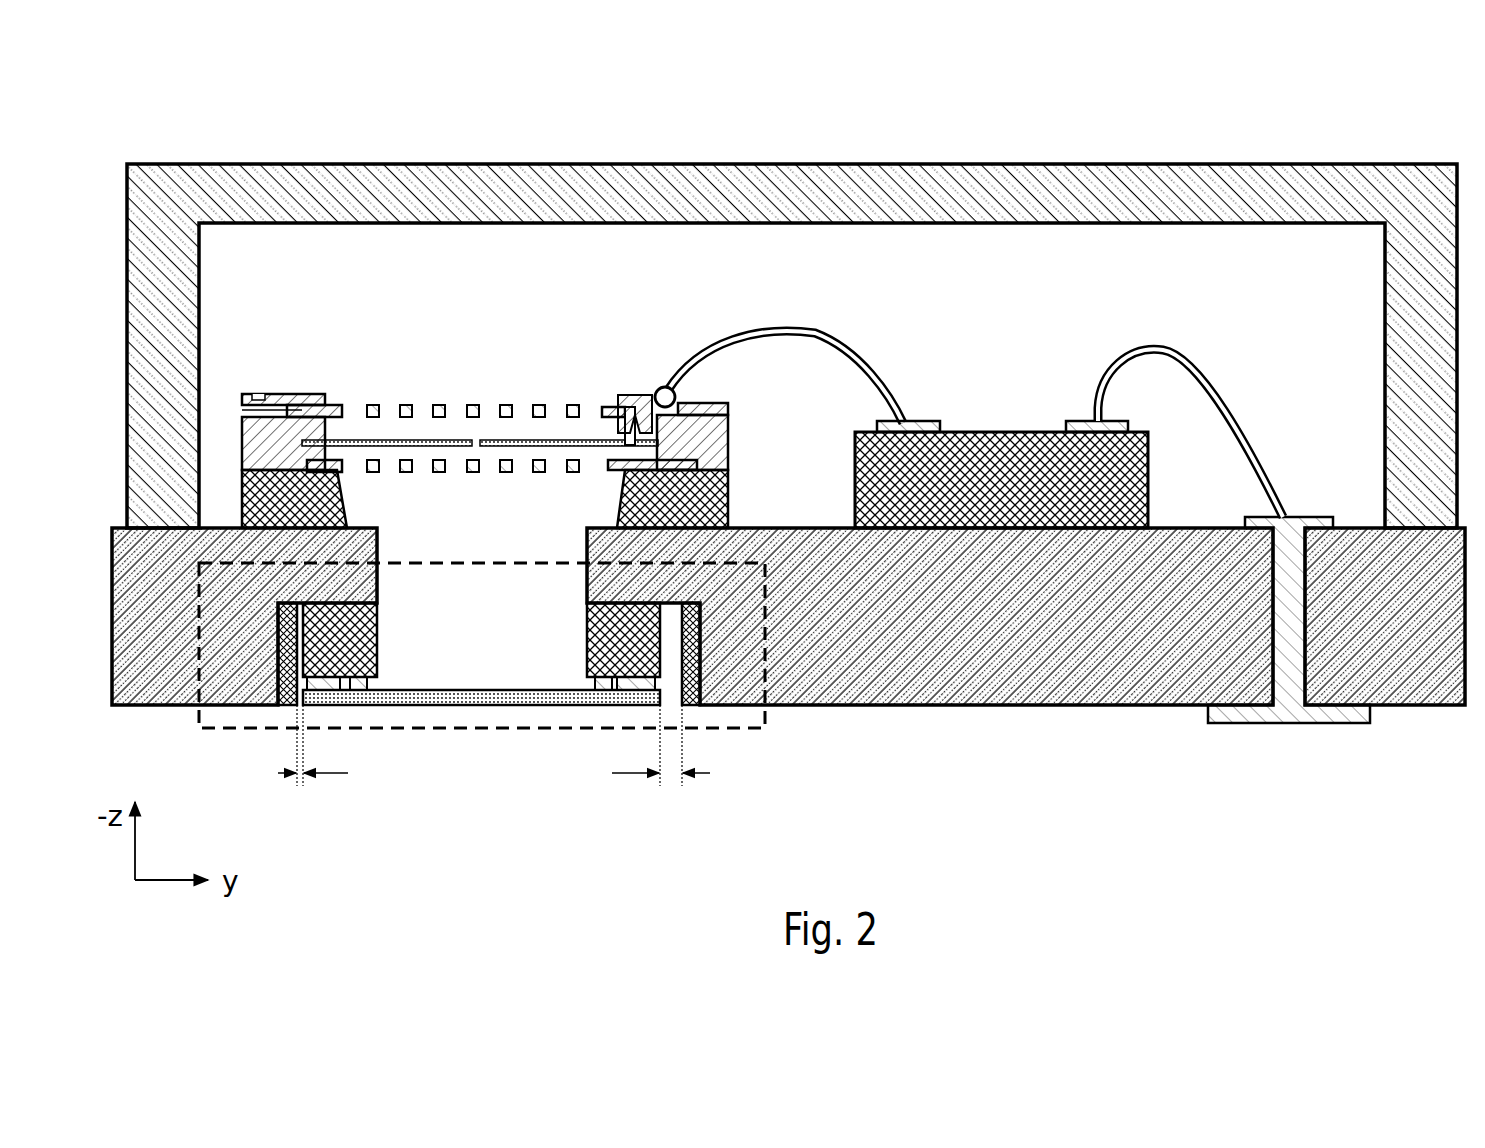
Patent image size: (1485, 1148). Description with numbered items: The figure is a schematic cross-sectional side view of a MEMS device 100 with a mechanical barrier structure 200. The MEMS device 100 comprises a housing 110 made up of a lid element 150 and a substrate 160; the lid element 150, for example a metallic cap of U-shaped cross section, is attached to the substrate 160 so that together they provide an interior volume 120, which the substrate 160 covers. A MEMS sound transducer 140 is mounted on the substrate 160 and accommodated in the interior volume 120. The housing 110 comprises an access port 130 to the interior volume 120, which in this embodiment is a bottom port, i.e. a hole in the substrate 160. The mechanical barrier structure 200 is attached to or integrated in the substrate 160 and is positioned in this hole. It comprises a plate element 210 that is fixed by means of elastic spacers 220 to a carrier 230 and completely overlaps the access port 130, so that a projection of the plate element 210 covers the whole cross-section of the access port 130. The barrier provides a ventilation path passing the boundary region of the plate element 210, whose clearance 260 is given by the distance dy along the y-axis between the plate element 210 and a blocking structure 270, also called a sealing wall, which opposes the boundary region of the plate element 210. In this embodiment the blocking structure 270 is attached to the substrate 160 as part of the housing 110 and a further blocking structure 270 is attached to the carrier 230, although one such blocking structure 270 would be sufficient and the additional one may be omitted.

The MEMS device 100 is at (1240, 134).
The housing 110 is at (1355, 527).
The interior volume 120 is at (832, 237).
The access port 130 is at (447, 560).
The MEMS sound transducer 140 is at (740, 442).
The lid element 150 is at (1387, 175).
The substrate 160 is at (1408, 702).
The mechanical barrier structure 200 is at (560, 735).
The plate element 210 is at (456, 710).
The elastic spacers 220 is at (368, 685).
The carrier 230 is at (378, 636).
The clearance 260 is at (299, 786).
The blocking structure 270 is at (288, 708).